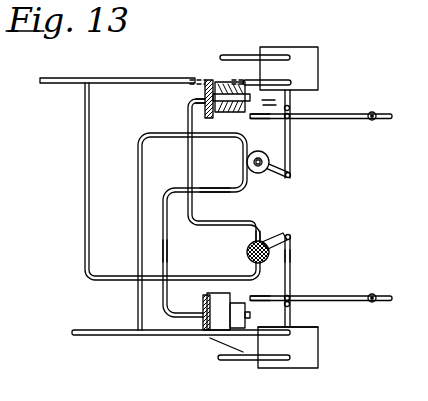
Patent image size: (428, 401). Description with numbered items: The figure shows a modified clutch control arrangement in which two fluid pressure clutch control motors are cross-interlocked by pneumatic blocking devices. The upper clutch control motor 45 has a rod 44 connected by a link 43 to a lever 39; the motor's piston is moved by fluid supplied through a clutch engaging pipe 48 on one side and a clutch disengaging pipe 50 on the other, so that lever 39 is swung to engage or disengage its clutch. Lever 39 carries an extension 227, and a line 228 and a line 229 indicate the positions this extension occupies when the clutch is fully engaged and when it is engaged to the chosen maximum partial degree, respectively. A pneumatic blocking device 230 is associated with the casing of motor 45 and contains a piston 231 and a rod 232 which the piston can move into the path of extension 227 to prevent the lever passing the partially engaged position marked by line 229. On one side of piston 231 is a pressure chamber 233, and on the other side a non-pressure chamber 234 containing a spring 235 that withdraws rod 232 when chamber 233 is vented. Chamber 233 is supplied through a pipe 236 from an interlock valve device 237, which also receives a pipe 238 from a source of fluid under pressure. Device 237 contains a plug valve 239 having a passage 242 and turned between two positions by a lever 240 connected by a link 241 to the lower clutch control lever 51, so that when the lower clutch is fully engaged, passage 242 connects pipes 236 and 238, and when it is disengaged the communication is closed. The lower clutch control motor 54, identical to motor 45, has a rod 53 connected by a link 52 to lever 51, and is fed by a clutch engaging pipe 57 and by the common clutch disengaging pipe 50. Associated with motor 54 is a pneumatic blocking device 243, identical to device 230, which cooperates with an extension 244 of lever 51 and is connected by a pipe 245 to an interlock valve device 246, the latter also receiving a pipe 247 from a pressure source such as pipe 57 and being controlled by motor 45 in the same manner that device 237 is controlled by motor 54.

The lever 39 is at (361, 114).
The link 43 is at (290, 112).
The rod 44 is at (291, 98).
The clutch control motor 45 is at (284, 48).
The clutch engaging pipe 48 is at (62, 78).
The clutch disengaging pipe 50 is at (237, 44).
The lever 51 is at (345, 296).
The link 52 is at (292, 304).
The rod 53 is at (291, 318).
The clutch control motor 54 is at (318, 362).
The clutch engaging pipe 57 is at (98, 334).
The extension 227 is at (264, 118).
The line 228 is at (283, 80).
The line 229 is at (264, 106).
The pneumatic blocking device 230 is at (203, 89).
The piston 231 is at (210, 108).
The rod 232 is at (239, 113).
The pressure chamber 233 is at (202, 97).
The non-pressure chamber 234 is at (216, 180).
The spring 235 is at (224, 86).
The pipe 236 is at (188, 161).
The interlock valve device 237 is at (272, 256).
The pipe 238 is at (86, 246).
The plug valve 239 is at (253, 259).
The lever 240 is at (283, 232).
The link 241 is at (291, 277).
The passage 242 is at (250, 243).
The pneumatic blocking device 243 is at (203, 321).
The extension 244 is at (253, 301).
The pipe 245 is at (163, 250).
The interlock valve device 246 is at (265, 172).
The pipe 247 is at (140, 246).